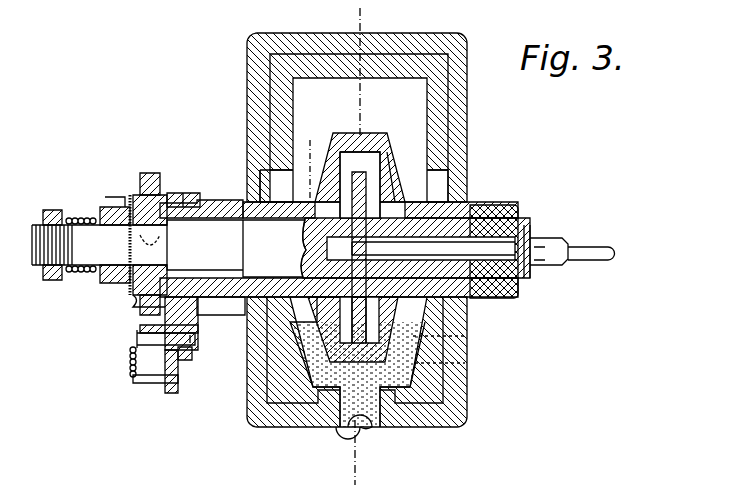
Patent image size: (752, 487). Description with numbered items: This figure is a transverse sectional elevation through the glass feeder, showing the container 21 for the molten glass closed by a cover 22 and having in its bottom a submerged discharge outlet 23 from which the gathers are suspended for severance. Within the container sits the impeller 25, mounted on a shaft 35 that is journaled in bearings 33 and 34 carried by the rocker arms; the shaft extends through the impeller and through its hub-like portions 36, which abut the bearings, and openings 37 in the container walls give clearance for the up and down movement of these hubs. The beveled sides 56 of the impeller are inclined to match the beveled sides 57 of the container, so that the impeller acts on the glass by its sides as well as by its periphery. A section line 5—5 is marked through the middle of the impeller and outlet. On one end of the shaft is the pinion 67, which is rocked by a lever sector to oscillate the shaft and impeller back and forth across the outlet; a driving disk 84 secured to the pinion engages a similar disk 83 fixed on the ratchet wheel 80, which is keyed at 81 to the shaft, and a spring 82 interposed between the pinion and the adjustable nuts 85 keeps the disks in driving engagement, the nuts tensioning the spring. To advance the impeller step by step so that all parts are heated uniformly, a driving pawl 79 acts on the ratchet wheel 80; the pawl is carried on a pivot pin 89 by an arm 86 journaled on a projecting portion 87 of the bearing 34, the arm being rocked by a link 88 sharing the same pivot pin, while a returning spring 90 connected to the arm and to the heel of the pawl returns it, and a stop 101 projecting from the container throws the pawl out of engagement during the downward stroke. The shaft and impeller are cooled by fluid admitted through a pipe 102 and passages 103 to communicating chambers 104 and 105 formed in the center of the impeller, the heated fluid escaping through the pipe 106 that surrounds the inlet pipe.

The section line 5- 5 is at (352, 14).
The container 21 is at (249, 407).
The cover 22 is at (247, 50).
The discharge outlet 23 is at (360, 430).
The impeller 25 is at (352, 140).
The bearing 33 is at (512, 207).
The bearing 34 is at (243, 203).
The shaft 35 is at (255, 276).
The hub-like portions 36 is at (265, 198).
The openings 37 is at (256, 190).
The beveled sides of the impeller 56 is at (465, 336).
The beveled sides of the container 57 is at (465, 363).
The pinion 67 is at (108, 207).
The driving pawl 79 is at (140, 328).
The ratchet wheel 80 is at (153, 173).
The key 81 is at (137, 195).
The spring 82 is at (74, 216).
The disk 83 is at (130, 300).
The driving disk 84 is at (128, 290).
The adjustable nuts 85 is at (52, 210).
The arm 86 is at (178, 193).
The projecting portion 87 is at (188, 193).
The link 88 is at (186, 358).
The pivot pin 89 is at (137, 340).
The returning spring 90 is at (130, 366).
The stop 101 is at (170, 388).
The pipe 102 is at (585, 250).
The passages 103 is at (358, 203).
The chamber 104 is at (395, 160).
The chamber 105 is at (312, 140).
The pipe 106 is at (560, 272).